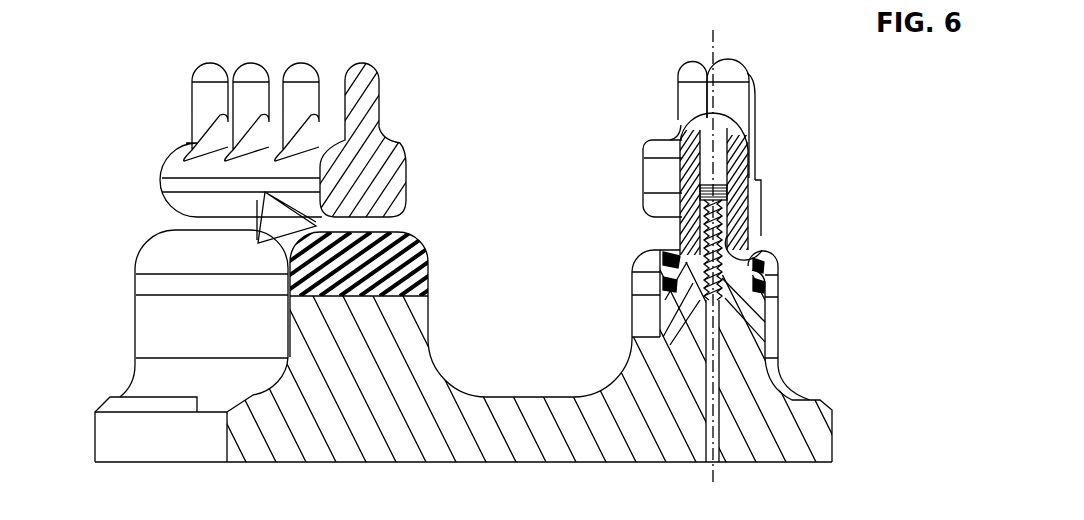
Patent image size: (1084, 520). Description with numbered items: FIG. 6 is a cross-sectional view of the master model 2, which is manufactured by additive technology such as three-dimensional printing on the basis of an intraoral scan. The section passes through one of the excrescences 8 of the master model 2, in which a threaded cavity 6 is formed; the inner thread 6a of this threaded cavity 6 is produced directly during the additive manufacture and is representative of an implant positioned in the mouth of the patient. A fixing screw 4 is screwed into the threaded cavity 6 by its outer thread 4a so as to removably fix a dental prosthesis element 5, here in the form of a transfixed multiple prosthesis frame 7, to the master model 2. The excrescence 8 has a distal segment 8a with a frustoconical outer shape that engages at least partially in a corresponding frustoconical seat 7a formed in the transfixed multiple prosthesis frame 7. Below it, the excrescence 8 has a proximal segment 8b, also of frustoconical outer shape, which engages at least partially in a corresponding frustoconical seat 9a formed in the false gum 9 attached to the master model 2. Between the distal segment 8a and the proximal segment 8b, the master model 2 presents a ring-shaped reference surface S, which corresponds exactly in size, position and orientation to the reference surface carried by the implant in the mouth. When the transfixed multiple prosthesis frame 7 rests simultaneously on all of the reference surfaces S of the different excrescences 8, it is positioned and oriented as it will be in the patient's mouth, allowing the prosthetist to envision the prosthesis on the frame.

The master model 2 is at (116, 370).
The fixing screw 4 is at (682, 114).
The outer thread 4a is at (717, 274).
The dental prosthesis element 5 is at (400, 140).
The threaded cavity 6 is at (720, 294).
The inner thread 6a is at (757, 262).
The transfixed multiple prosthesis frame 7 is at (241, 140).
The frustoconical seat 7a is at (752, 247).
The excrescence 8 is at (660, 336).
The distal segment 8a is at (755, 235).
The proximal segment 8b is at (690, 290).
The false gum 9 is at (415, 236).
The frustoconical seat 9a is at (678, 232).
The reference surface S is at (682, 228).